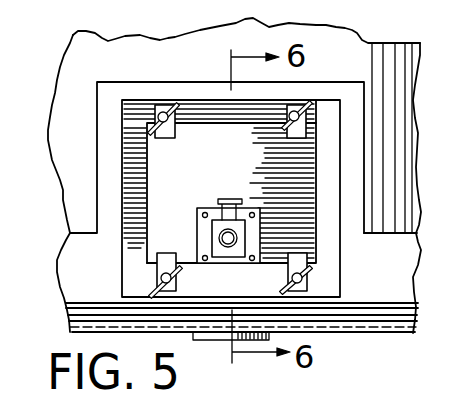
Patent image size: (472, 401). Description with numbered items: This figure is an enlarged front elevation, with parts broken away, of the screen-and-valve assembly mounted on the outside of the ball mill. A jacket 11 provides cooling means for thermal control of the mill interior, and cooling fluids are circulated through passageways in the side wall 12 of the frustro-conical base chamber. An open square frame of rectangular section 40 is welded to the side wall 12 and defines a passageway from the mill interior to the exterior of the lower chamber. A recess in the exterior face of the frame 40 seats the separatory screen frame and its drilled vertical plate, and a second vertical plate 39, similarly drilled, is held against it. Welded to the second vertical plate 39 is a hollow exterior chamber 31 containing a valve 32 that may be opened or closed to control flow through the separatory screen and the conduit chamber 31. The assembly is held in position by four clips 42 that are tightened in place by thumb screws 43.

The jacket 11 is at (99, 50).
The side wall 12 is at (397, 268).
The hollow exterior chamber 31 is at (197, 234).
The valve 32 is at (229, 199).
The second vertical plate 39 is at (163, 168).
The open square frame of rectangular section 40 is at (121, 137).
The clips 42 is at (287, 127).
The thumb screws 43 is at (167, 104).